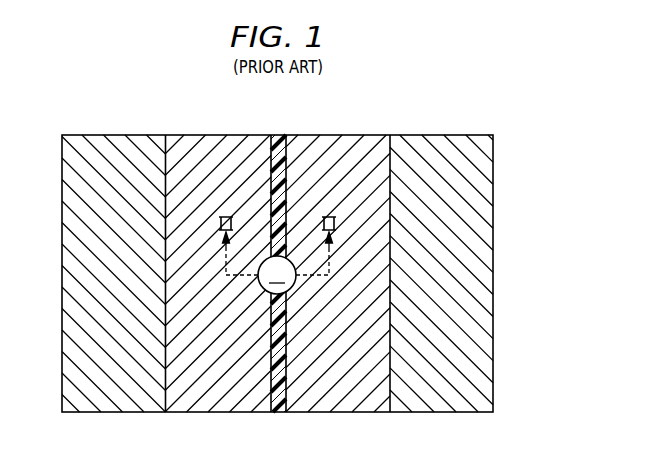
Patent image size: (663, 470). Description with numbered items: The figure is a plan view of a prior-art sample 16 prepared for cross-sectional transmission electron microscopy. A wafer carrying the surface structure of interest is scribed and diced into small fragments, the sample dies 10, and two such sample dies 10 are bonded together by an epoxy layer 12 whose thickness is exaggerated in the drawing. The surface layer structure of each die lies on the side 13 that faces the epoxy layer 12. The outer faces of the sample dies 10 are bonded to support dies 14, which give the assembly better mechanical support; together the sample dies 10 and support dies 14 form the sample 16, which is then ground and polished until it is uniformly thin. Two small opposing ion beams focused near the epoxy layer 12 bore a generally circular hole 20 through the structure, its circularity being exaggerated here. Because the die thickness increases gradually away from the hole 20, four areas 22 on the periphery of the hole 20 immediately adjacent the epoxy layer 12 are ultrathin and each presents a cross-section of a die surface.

The sample die 10 is at (218, 135).
The epoxy layer 12 is at (275, 137).
The structured layer side 13 is at (271, 153).
The support die 14 is at (124, 135).
The sample 16 is at (508, 357).
The hole 20 is at (277, 255).
The ultrathin area 22 is at (285, 292).